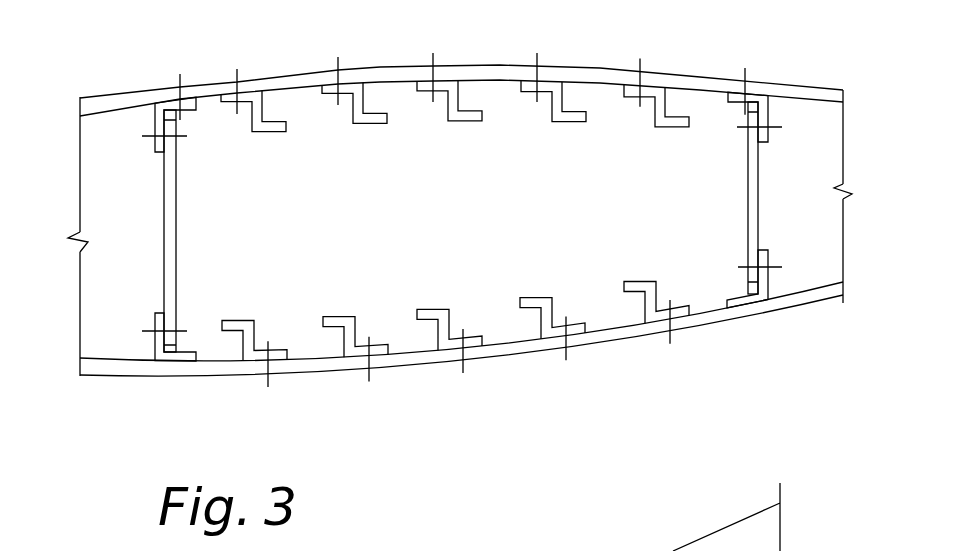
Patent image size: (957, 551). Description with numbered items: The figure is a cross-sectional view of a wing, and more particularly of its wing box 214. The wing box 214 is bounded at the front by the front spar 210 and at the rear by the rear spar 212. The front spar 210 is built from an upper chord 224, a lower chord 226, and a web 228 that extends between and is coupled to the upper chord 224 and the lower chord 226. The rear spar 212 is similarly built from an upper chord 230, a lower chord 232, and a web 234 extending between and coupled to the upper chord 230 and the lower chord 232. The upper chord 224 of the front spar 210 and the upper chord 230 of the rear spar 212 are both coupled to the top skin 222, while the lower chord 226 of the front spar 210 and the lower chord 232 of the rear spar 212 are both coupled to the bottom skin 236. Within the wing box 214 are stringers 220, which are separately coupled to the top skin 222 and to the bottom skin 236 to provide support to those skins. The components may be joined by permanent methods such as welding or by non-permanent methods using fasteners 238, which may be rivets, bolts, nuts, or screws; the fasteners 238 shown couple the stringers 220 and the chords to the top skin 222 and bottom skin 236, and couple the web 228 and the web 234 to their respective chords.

The front spar 210 is at (100, 203).
The rear spar 212 is at (822, 178).
The wing box 214 is at (700, 392).
The stringers 220 is at (372, 125).
The top skin 222 is at (492, 64).
The upper chord 224 is at (155, 146).
The lower chord 226 is at (155, 319).
The web 228 is at (163, 262).
The upper chord 230 is at (770, 137).
The lower chord 232 is at (769, 257).
The web 234 is at (760, 213).
The bottom skin 236 is at (508, 357).
The fasteners 238 is at (186, 137).